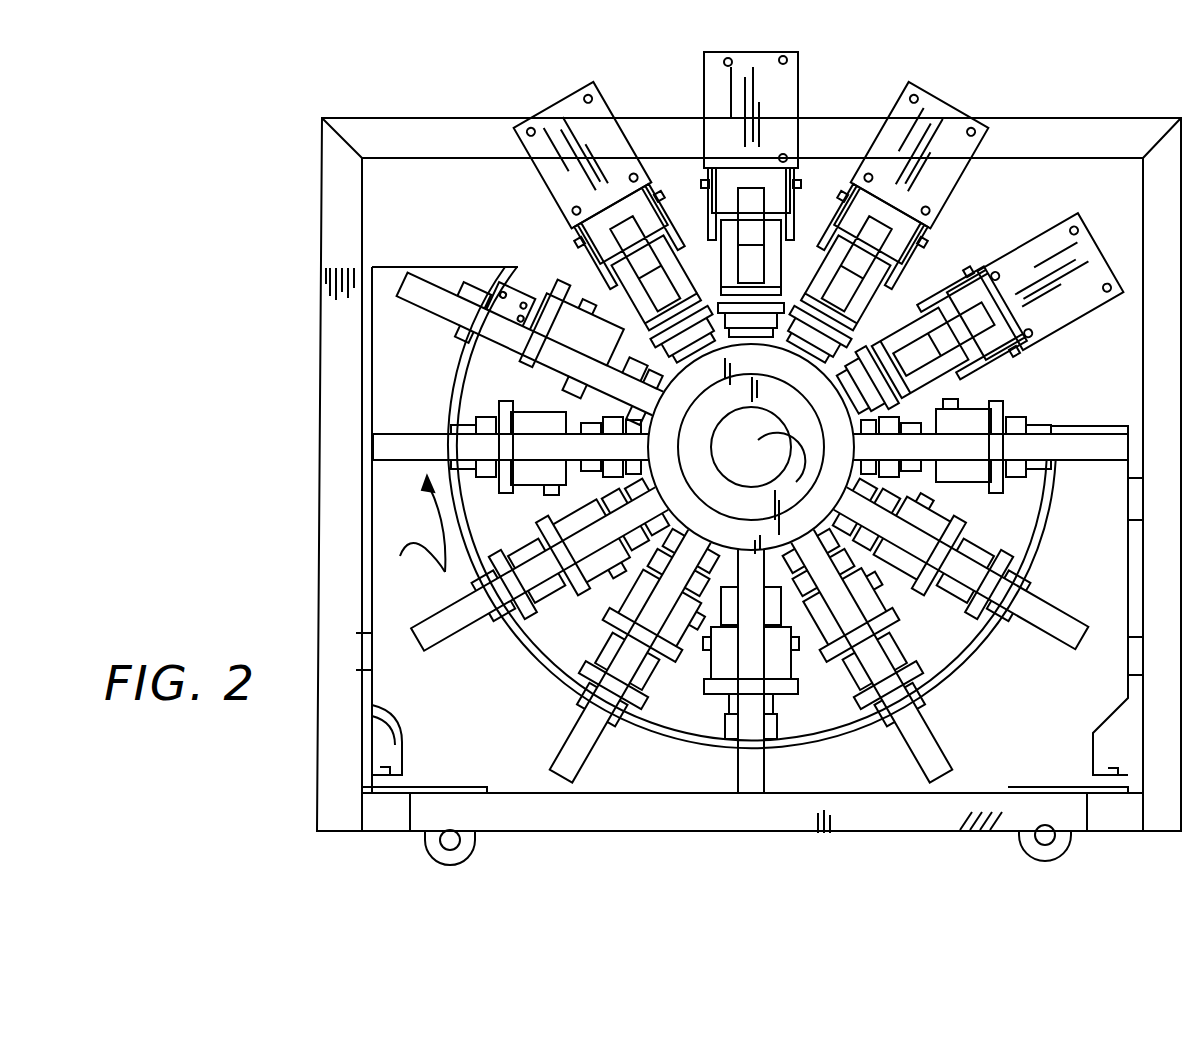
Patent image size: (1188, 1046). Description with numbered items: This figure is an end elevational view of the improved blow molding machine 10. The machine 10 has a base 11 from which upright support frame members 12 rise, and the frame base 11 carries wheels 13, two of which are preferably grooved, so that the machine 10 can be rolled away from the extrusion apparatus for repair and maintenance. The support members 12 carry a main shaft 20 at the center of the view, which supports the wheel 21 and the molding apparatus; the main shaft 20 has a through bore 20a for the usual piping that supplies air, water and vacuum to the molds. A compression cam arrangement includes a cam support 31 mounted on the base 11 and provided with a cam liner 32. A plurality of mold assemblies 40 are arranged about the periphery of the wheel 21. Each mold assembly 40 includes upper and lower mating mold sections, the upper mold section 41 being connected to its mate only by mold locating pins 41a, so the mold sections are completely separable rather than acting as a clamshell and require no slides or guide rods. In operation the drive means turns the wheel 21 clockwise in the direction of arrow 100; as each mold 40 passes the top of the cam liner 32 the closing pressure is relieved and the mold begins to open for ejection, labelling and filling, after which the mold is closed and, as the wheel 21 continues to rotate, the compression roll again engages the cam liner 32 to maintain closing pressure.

The molding machine 10 is at (306, 411).
The base 11 is at (517, 815).
The upright support frame member 12 is at (336, 583).
The wheels 13 is at (437, 852).
The main shaft 20 is at (810, 430).
The through bore 20a is at (840, 485).
The wheel 21 is at (770, 456).
The cam support 31 is at (392, 513).
The cam liner 32 is at (535, 660).
The mold assembly 40 is at (481, 400).
The upper mold section 41 is at (567, 127).
The mold locating pins 41a is at (728, 63).
The arrow 100 is at (415, 531).